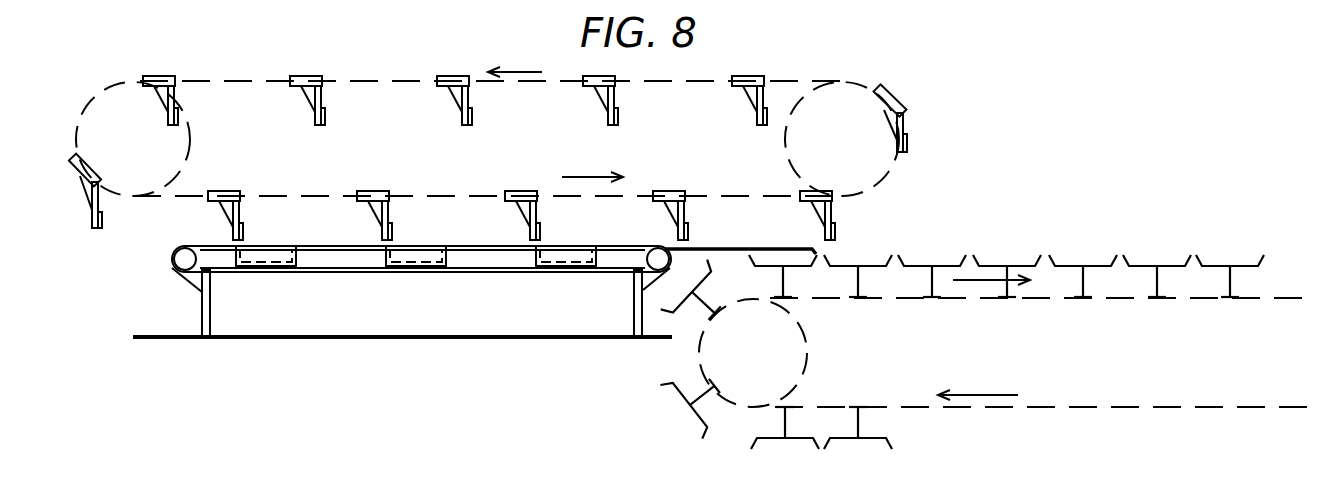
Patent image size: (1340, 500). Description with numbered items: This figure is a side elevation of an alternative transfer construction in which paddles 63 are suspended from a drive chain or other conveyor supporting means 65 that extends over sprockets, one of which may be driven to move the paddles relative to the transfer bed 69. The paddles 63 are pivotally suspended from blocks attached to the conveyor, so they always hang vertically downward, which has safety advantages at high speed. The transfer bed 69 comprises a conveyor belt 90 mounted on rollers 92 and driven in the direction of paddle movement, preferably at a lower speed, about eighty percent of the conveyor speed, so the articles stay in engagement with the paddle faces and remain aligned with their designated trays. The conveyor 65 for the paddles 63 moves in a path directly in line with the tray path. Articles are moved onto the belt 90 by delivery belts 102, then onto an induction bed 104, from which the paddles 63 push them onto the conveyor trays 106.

The drive chain or conveyor supporting means 65 is at (240, 78).
The paddle 63 is at (325, 112).
The transfer bed 69 is at (333, 238).
The conveyor belt 90 is at (340, 272).
The roller 92 is at (190, 256).
The delivery belt 102 is at (276, 262).
The induction bed 104 is at (733, 248).
The conveyor tray 106 is at (1003, 265).